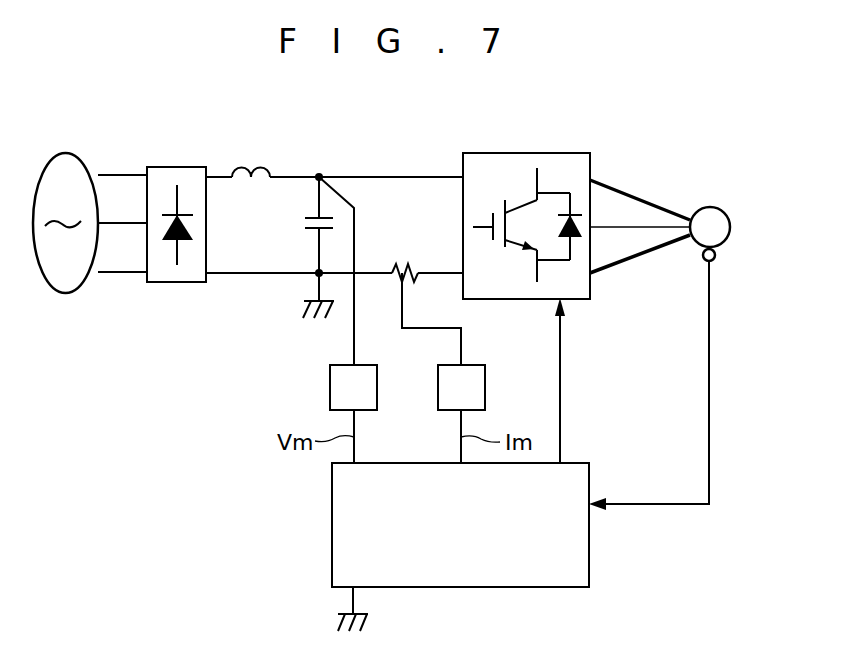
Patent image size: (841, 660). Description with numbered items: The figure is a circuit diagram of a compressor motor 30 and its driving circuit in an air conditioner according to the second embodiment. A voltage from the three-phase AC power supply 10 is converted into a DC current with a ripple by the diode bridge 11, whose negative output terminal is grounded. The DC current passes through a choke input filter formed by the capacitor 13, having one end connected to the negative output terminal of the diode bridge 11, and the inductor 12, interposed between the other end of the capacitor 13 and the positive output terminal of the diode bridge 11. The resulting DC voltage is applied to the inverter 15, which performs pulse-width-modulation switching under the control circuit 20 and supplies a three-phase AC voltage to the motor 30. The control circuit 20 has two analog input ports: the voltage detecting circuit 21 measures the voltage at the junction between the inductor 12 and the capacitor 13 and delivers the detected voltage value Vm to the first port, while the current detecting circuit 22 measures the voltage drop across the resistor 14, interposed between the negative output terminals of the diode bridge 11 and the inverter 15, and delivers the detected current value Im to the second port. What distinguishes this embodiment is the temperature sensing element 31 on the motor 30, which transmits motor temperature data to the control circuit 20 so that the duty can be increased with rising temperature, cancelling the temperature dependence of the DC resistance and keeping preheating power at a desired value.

The three-phase AC power supply 10 is at (65, 293).
The diode bridge 11 is at (175, 282).
The inductor 12 is at (250, 182).
The capacitor 13 is at (300, 225).
The resistor 14 is at (402, 262).
The inverter 15 is at (592, 168).
The control circuit 20 is at (591, 545).
The voltage detecting circuit 21 is at (330, 385).
The current detecting circuit 22 is at (486, 388).
The compressor motor 30 is at (712, 207).
The temperature sensing element 31 is at (716, 258).